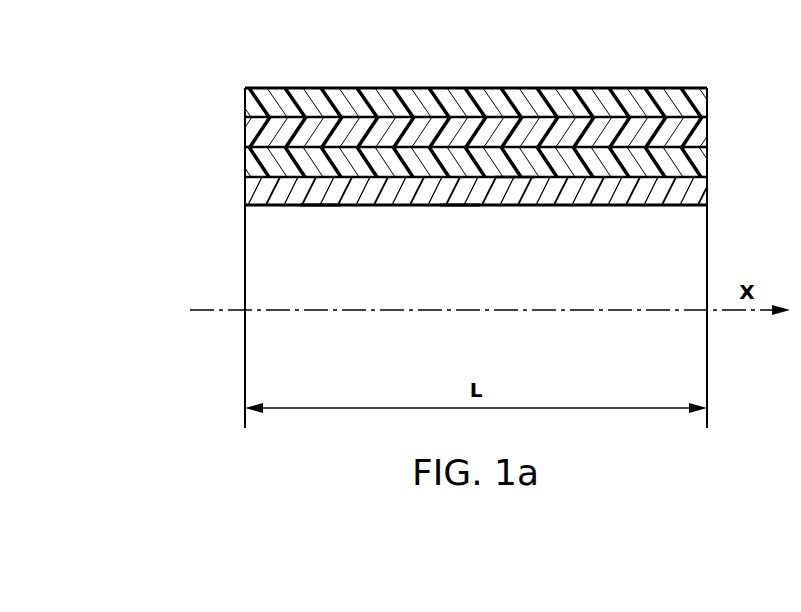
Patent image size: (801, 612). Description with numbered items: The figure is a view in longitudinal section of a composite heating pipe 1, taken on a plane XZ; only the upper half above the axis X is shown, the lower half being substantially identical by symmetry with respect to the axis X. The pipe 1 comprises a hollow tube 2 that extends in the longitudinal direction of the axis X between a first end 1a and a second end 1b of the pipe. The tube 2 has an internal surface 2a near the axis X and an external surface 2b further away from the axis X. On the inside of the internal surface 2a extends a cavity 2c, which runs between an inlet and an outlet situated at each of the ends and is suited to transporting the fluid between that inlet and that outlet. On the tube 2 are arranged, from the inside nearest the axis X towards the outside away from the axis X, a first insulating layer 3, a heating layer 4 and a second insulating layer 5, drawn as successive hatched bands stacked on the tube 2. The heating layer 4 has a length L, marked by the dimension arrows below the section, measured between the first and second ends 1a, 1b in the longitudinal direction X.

The pipe 1 is at (475, 214).
The first end 1a is at (230, 195).
The second end 1b is at (726, 207).
The hollow tube 2 is at (699, 196).
The internal surface 2a is at (320, 206).
The external surface 2b is at (515, 178).
The cavity 2c is at (456, 284).
The first insulating layer 3 is at (704, 166).
The heating layer 4 is at (701, 139).
The second insulating layer 5 is at (708, 98).